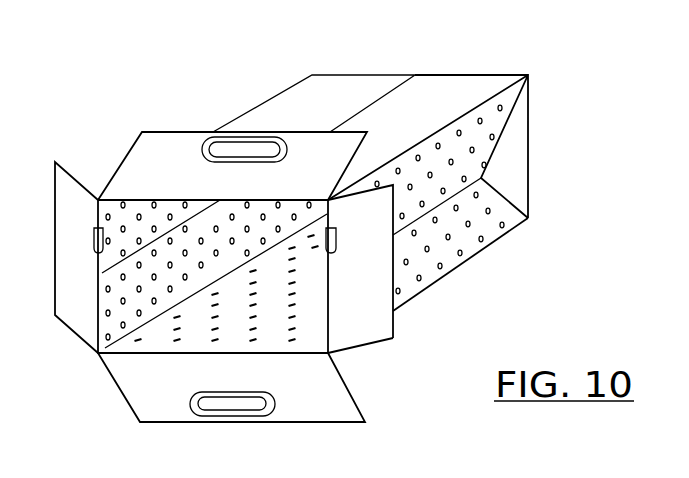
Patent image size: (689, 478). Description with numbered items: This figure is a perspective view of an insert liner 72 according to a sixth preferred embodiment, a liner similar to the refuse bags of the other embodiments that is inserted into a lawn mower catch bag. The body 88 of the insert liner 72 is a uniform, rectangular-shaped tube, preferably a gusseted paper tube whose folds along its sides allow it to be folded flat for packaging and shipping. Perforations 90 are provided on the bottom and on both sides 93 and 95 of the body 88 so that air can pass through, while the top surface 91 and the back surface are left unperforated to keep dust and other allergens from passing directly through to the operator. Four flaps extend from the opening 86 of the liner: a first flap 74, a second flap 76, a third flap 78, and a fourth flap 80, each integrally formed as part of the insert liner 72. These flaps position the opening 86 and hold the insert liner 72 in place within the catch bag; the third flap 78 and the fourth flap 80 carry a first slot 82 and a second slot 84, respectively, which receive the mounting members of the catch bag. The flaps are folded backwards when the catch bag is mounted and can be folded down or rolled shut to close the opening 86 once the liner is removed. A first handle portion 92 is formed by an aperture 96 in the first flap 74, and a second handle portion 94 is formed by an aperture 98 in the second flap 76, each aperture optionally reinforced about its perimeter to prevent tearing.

The insert liner 72 is at (582, 108).
The first flap 74 is at (182, 147).
The second flap 76 is at (160, 412).
The third flap 78 is at (80, 312).
The fourth flap 80 is at (368, 328).
The first slot 82 is at (337, 253).
The second slot 84 is at (94, 238).
The opening 86 is at (328, 337).
The body 88 is at (448, 102).
The perforations 90 is at (504, 225).
The top surface 91 is at (347, 97).
The first handle portion 92 is at (263, 145).
The side 93 is at (440, 235).
The second handle portion 94 is at (275, 405).
The side 95 is at (117, 210).
The aperture 96 is at (233, 148).
The aperture 98 is at (230, 406).